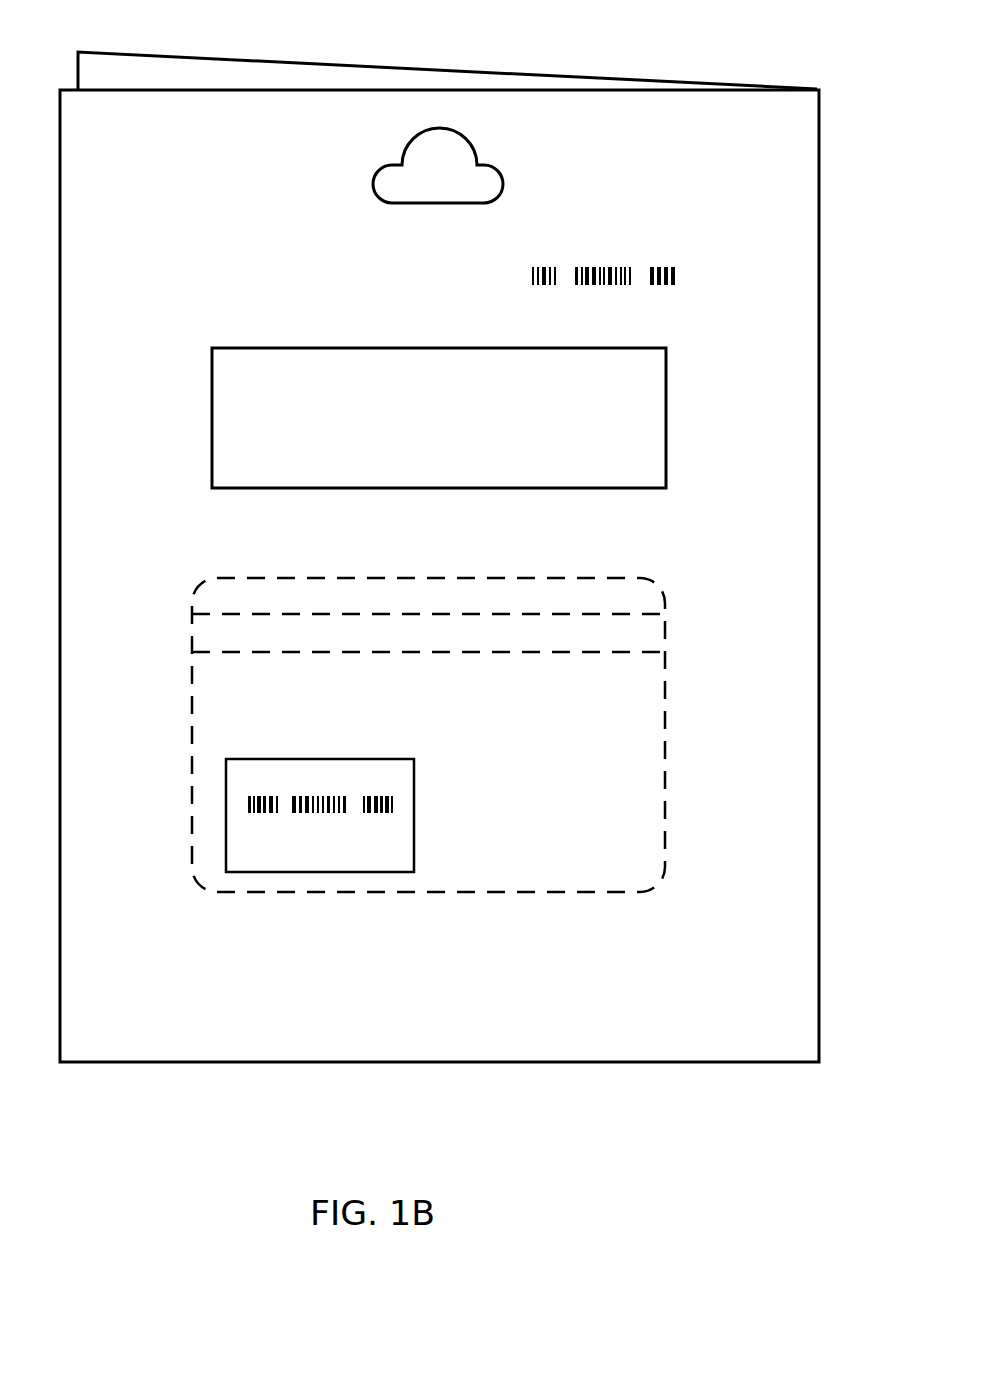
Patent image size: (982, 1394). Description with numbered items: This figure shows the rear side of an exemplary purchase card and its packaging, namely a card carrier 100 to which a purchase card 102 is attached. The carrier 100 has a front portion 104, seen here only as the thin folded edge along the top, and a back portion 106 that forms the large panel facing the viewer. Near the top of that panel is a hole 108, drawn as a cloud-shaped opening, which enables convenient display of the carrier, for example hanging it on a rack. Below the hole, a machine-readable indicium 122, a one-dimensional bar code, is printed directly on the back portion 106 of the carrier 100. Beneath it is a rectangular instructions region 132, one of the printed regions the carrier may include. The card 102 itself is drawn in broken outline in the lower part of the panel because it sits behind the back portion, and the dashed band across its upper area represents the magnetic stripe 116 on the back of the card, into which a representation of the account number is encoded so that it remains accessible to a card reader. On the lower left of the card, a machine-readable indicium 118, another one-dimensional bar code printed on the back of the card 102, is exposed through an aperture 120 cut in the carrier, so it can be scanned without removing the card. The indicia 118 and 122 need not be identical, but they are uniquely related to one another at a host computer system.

The card carrier 100 is at (649, 1062).
The purchase card 102 is at (327, 578).
The front portion 104 is at (122, 52).
The back portion 106 is at (161, 148).
The hole 108 is at (503, 180).
The magnetic stripe 116 is at (666, 650).
The machine-readable indicium 118 is at (226, 818).
The aperture 120 is at (326, 872).
The machine-readable indicium 122 is at (530, 267).
The instructions region 132 is at (642, 419).